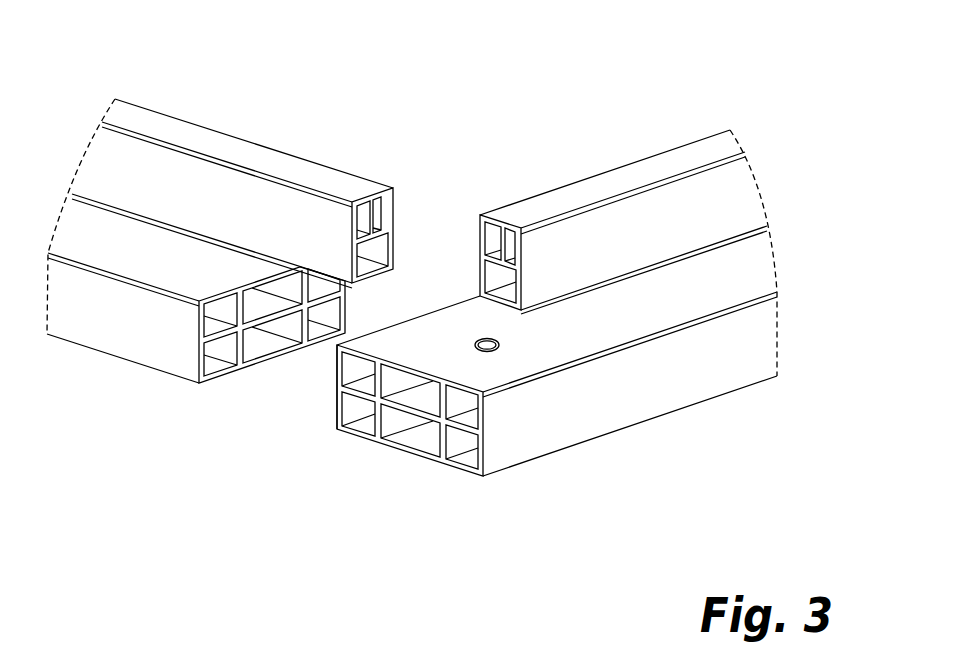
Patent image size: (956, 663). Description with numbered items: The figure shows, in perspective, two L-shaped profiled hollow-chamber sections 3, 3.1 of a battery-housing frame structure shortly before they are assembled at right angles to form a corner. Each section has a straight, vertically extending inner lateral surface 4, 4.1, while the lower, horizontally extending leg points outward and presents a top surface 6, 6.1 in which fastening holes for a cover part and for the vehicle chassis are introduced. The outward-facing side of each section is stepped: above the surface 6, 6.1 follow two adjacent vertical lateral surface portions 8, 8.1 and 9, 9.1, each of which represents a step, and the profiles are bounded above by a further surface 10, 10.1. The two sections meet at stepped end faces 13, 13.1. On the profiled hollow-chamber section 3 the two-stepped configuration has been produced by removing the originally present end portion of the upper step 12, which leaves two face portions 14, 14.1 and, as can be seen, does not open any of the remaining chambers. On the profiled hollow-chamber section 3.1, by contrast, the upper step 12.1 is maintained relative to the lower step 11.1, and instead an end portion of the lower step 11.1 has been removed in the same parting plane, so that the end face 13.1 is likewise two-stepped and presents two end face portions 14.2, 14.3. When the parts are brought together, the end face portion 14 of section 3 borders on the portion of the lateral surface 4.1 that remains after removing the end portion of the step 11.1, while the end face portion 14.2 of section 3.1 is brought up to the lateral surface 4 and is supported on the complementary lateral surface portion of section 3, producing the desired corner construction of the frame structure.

The profiled hollow-chamber section 3 is at (534, 307).
The profiled hollow-chamber section 3.1 is at (269, 302).
The lateral surface 4 is at (332, 390).
The lateral surface 4.1 is at (397, 206).
The surface 6 is at (714, 285).
The surface 6.1 is at (123, 262).
The lateral surface portion 8 is at (698, 369).
The lateral surface portion 8.1 is at (58, 312).
The lateral surface portion 9 is at (672, 225).
The lateral surface portion 9.1 is at (111, 187).
The surface 10 is at (620, 182).
The surface 10.1 is at (229, 154).
The step 11.1 is at (226, 420).
The step 12 is at (623, 306).
The step 12.1 is at (281, 188).
The end face 13 is at (387, 479).
The end face 13.1 is at (283, 364).
The end face portion 14 is at (492, 292).
The end face portion 14.1 is at (400, 438).
The end face portion 14.2 is at (235, 357).
The end face portion 14.3 is at (384, 247).